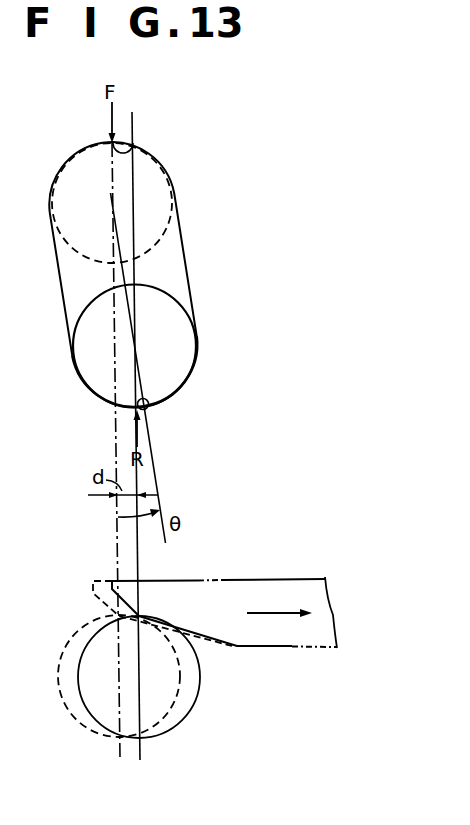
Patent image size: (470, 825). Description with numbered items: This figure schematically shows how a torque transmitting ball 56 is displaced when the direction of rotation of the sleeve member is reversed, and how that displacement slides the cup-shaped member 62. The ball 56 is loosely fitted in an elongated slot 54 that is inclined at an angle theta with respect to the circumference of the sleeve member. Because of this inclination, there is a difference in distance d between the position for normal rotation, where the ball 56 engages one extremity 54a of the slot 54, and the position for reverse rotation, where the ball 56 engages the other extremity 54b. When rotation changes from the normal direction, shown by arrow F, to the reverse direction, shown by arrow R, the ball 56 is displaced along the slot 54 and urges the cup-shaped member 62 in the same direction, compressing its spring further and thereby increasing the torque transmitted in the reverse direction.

The elongated slot 54 is at (112, 274).
The one extremity of slot 54a is at (155, 147).
The other extremity of slot 54b is at (172, 419).
The ball 56 is at (151, 440).
The cup-shaped member 62 is at (205, 595).